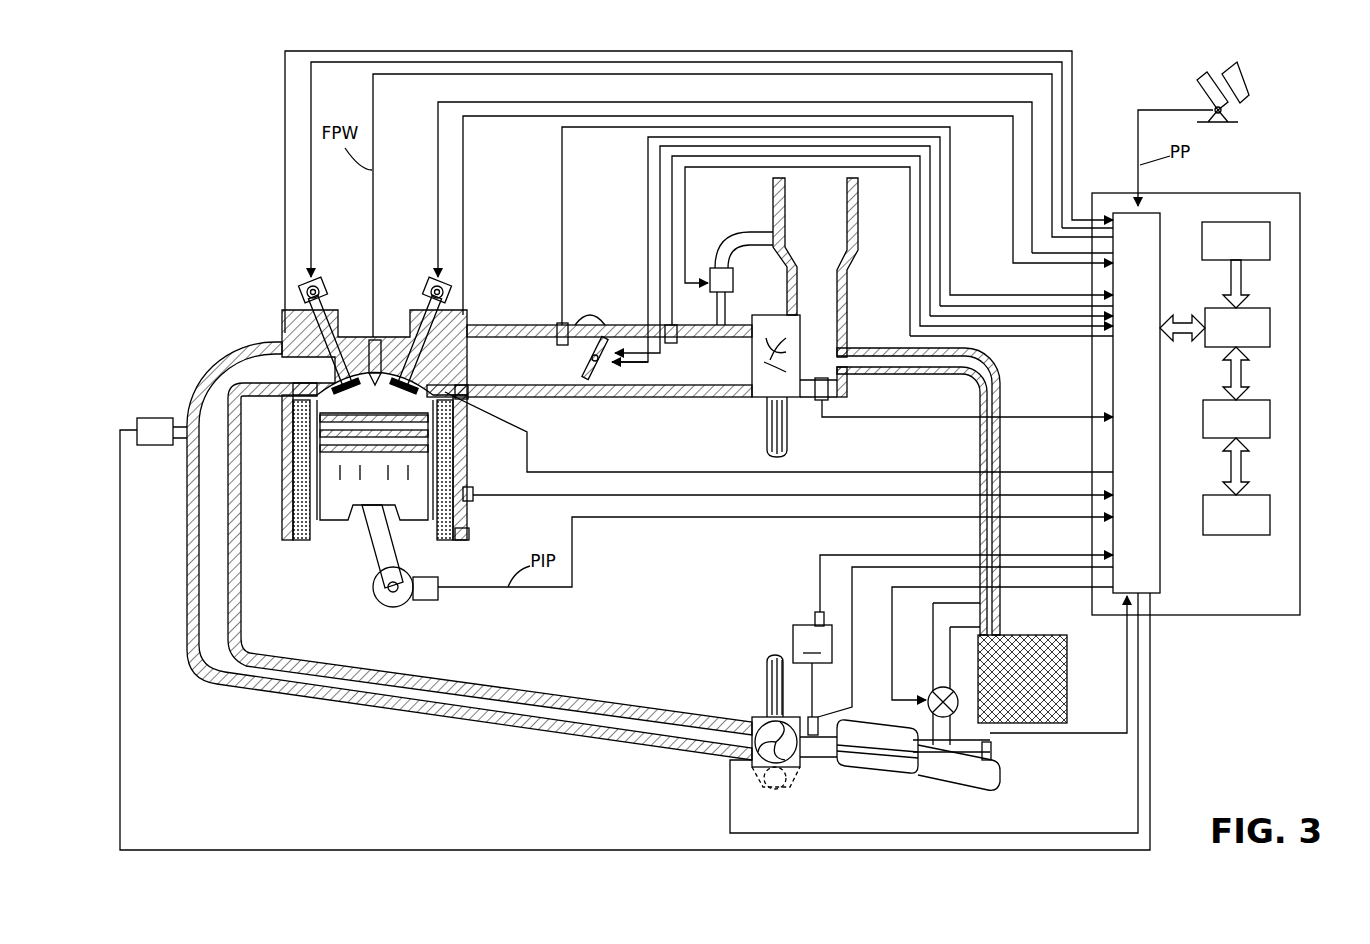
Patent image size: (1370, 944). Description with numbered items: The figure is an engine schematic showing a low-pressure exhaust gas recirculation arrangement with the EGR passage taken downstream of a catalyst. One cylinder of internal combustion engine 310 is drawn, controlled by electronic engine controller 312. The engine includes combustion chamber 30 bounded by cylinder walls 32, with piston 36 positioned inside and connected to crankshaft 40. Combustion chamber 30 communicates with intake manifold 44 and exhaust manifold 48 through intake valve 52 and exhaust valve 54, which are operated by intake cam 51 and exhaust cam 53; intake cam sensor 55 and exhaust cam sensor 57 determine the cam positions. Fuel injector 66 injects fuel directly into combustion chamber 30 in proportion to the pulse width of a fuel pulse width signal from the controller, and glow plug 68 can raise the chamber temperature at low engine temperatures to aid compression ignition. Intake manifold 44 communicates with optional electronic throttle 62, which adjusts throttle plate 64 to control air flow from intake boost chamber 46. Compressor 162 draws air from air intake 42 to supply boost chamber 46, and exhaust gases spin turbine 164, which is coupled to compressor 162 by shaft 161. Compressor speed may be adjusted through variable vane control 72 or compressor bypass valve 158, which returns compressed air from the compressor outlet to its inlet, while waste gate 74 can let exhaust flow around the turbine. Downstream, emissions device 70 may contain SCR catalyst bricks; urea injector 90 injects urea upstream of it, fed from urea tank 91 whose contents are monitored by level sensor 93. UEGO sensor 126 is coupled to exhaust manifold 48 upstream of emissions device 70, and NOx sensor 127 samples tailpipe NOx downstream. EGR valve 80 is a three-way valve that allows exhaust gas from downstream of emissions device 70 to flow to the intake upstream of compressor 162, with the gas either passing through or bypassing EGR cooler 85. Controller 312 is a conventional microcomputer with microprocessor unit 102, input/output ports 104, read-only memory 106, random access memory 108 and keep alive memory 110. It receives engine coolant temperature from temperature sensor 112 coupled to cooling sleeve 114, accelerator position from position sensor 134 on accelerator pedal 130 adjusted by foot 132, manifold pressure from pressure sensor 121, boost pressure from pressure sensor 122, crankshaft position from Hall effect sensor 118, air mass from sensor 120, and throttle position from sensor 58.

The internal combustion engine 310 is at (228, 270).
The combustion chamber 30 is at (302, 497).
The cylinder walls 32 is at (306, 548).
The piston 36 is at (360, 493).
The crankshaft 40 is at (382, 603).
The air intake 42 is at (805, 247).
The intake manifold 44 is at (503, 371).
The intake boost chamber 46 is at (673, 371).
The exhaust manifold 48 is at (242, 374).
The intake cam 51 is at (428, 283).
The intake valve 52 is at (414, 378).
The exhaust cam 53 is at (322, 280).
The exhaust valve 54 is at (282, 340).
The intake cam sensor 55 is at (452, 300).
The exhaust cam sensor 57 is at (299, 292).
The throttle position sensor 58 is at (614, 367).
The electronic throttle 62 is at (584, 326).
The throttle plate 64 is at (600, 335).
The fuel injector 66 is at (362, 340).
The glow plug 68 is at (463, 400).
The emissions device 70 is at (870, 774).
The variable vane control 72 is at (752, 763).
The waste gate 74 is at (779, 790).
The EGR valve 80 is at (929, 698).
The EGR cooler 85 is at (1068, 672).
The urea injector 90 is at (816, 716).
The urea tank 91 is at (812, 671).
The level sensor 93 is at (816, 613).
The microprocessor unit 102 is at (1270, 325).
The input/output ports 104 is at (1165, 222).
The read-only memory 106 is at (1270, 240).
The random access memory 108 is at (1270, 418).
The keep alive memory 110 is at (1270, 515).
The temperature sensor 112 is at (474, 492).
The cooling sleeve 114 is at (470, 534).
The Hall effect sensor 118 is at (428, 602).
The air mass sensor 120 is at (829, 398).
The pressure sensor 121 is at (558, 326).
The pressure sensor 122 is at (672, 326).
The UEGO sensor 126 is at (137, 425).
The NOx sensor 127 is at (992, 750).
The accelerator pedal 130 is at (1200, 80).
The foot 132 is at (1250, 80).
The position sensor 134 is at (1238, 118).
The compressor bypass valve 158 is at (720, 268).
The shaft 161 is at (766, 440).
The compressor 162 is at (752, 390).
The turbine 164 is at (754, 717).
The electronic engine controller 312 is at (1290, 193).